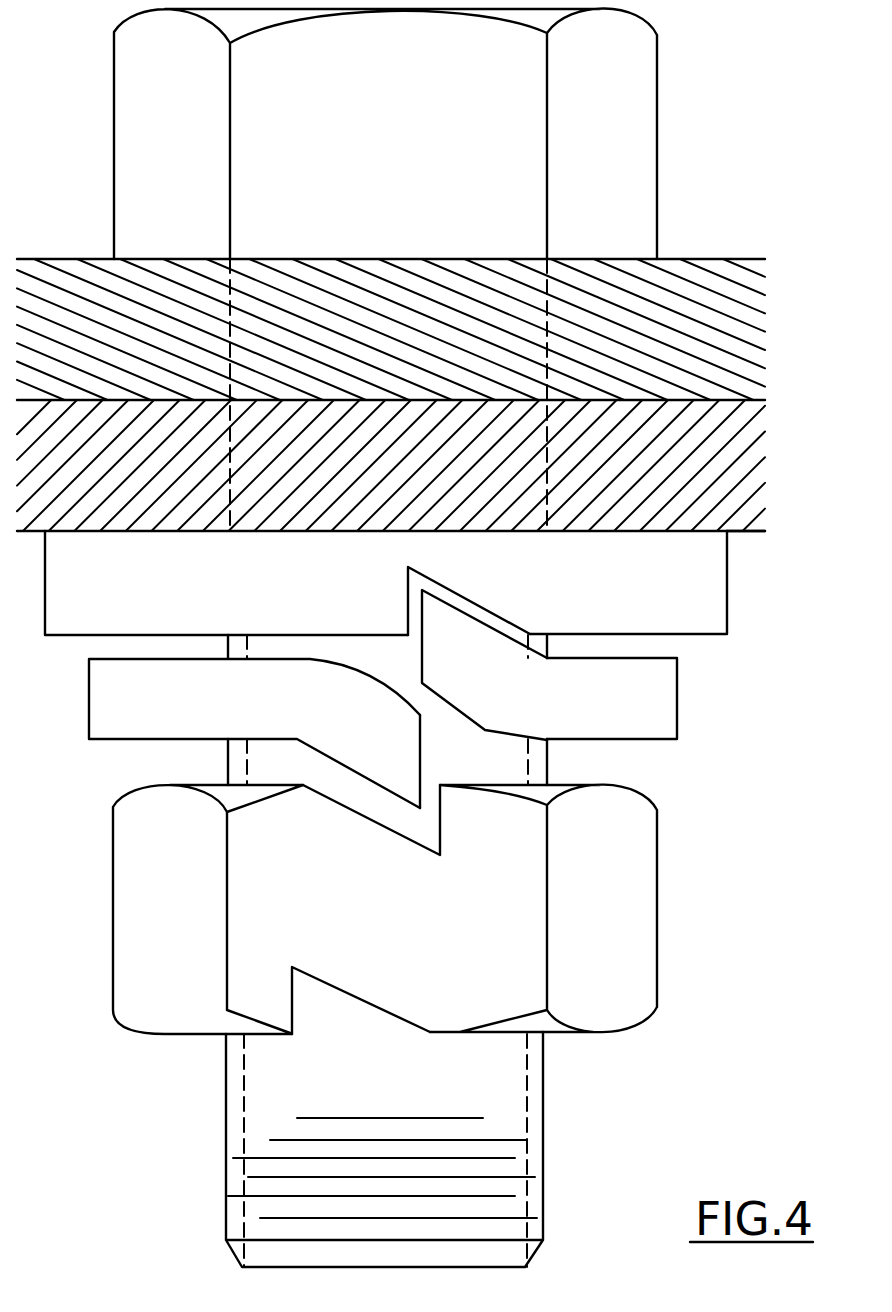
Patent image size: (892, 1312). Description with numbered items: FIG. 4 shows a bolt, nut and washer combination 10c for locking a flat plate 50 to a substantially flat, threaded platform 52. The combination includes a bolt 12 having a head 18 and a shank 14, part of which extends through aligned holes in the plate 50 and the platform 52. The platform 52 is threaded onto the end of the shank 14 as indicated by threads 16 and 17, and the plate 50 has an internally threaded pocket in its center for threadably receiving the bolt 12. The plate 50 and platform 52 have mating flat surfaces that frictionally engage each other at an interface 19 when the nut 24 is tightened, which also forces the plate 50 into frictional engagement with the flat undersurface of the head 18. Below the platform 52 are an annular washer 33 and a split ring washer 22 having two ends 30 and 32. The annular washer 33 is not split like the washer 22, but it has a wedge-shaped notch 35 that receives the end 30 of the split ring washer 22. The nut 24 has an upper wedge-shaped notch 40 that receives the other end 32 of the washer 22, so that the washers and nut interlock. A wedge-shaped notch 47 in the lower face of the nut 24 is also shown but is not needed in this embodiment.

The bolt, nut and washer combination 10c is at (719, 154).
The bolt 12 is at (543, 1223).
The shank 14 is at (543, 1163).
The threads 16 is at (500, 1138).
The threads 17 is at (229, 483).
The head 18 is at (638, 113).
The interface 19 is at (765, 402).
The split ring washer 22 is at (678, 728).
The nut 24 is at (656, 888).
The end of split ring washer 30 is at (422, 633).
The end of split ring washer 32 is at (422, 753).
The annular washer 33 is at (728, 610).
The wedge-shaped notch 35 is at (493, 613).
The upper wedge-shaped notch 40 is at (380, 822).
The wedge-shaped notch 47 is at (377, 1007).
The plate 50 is at (673, 260).
The platform 52 is at (740, 537).